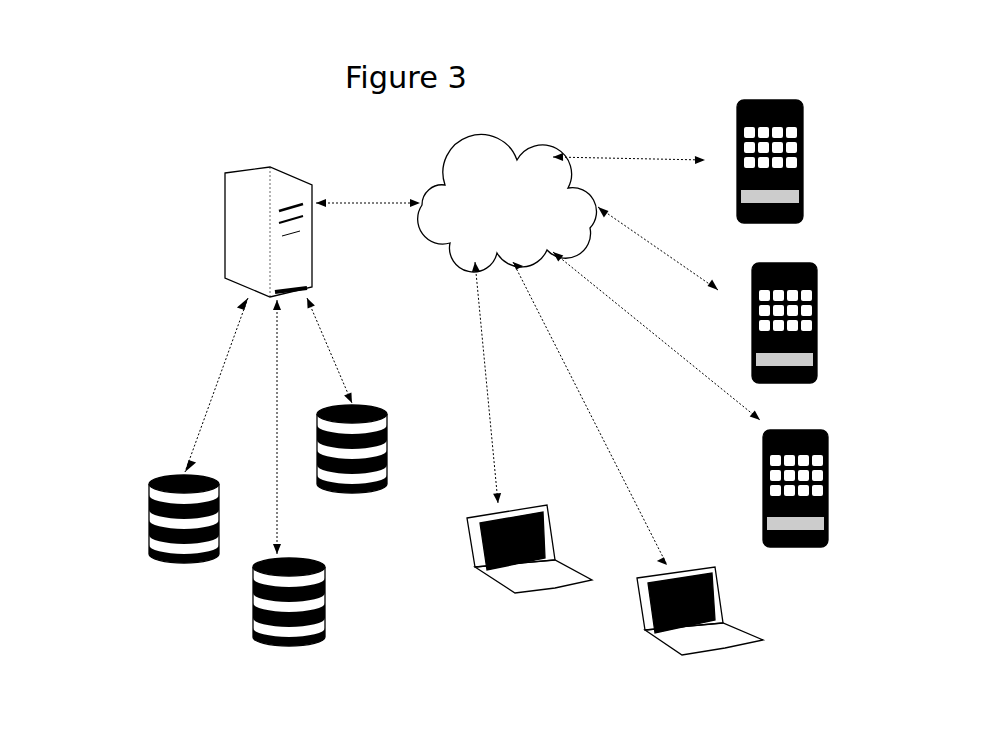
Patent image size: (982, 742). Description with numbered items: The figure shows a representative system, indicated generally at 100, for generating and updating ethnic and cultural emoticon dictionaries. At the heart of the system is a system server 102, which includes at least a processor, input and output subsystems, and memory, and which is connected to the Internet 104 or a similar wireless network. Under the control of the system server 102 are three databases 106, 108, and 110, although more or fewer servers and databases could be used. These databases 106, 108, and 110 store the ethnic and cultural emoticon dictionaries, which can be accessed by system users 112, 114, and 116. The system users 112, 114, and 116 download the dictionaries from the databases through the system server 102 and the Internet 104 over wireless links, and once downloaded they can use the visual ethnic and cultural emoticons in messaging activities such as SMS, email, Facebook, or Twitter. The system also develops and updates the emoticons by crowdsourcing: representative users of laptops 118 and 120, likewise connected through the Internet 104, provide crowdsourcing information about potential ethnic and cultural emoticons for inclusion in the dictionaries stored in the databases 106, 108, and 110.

The system 100 is at (112, 133).
The system server 102 is at (222, 172).
The Internet 104 is at (502, 145).
The database 106 is at (148, 550).
The database 108 is at (252, 623).
The database 110 is at (390, 465).
The system user 112 is at (808, 117).
The system user 114 is at (820, 355).
The system user 116 is at (830, 520).
The laptop 118 is at (555, 590).
The laptop 120 is at (727, 652).